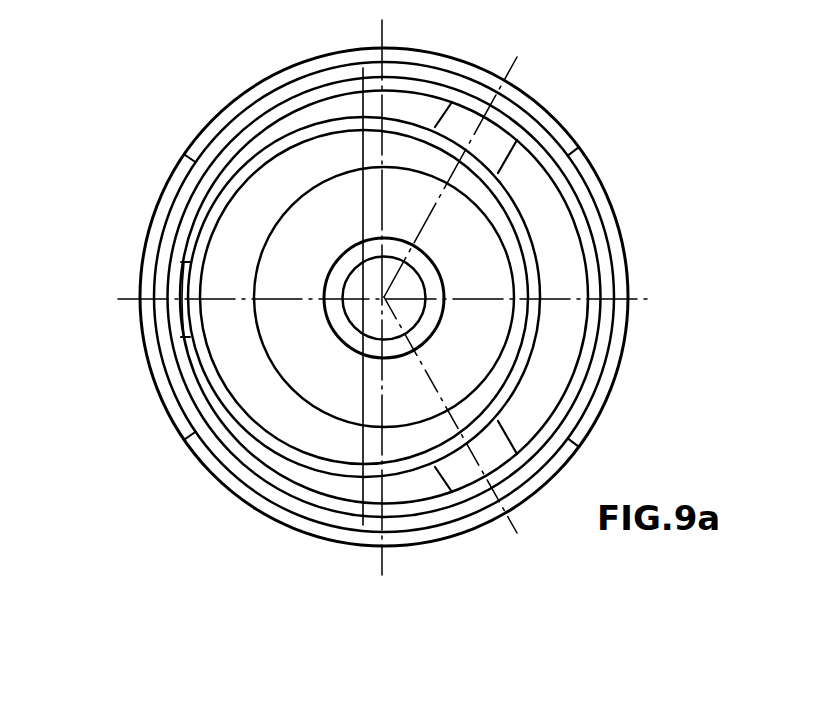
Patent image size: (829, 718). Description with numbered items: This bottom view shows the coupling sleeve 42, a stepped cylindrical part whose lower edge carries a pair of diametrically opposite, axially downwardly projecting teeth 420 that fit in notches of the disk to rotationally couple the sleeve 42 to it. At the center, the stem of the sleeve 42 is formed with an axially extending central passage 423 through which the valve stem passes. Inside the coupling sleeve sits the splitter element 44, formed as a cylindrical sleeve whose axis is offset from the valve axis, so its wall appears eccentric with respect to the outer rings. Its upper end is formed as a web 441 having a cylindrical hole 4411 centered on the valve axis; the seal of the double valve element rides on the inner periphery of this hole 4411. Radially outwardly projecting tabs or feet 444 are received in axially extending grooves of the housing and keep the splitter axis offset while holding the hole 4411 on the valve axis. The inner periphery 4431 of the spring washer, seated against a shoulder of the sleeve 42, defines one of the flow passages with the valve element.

The coupling sleeve 42 is at (650, 181).
The teeth 420 is at (151, 244).
The central passage 423 is at (356, 277).
The splitter element 44 is at (529, 318).
The web 441 is at (233, 364).
The tabs or feet 444 is at (487, 133).
The inner periphery of spring washer 4431 is at (293, 385).
The cylindrical hole 4411 is at (349, 407).